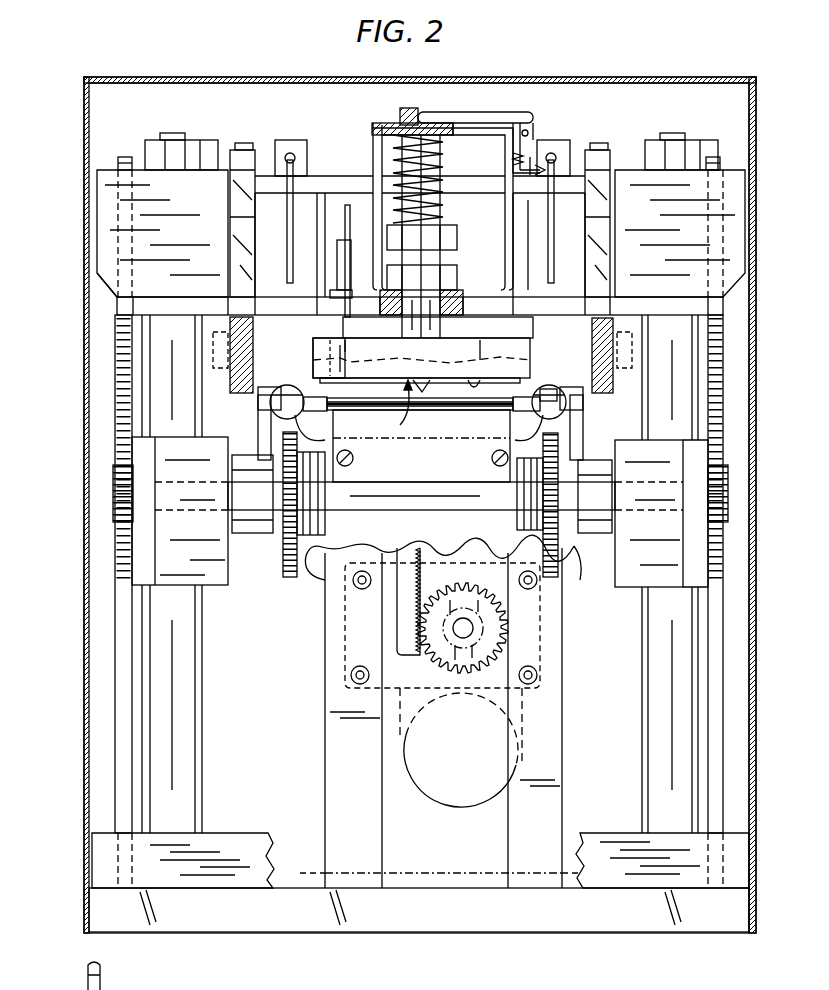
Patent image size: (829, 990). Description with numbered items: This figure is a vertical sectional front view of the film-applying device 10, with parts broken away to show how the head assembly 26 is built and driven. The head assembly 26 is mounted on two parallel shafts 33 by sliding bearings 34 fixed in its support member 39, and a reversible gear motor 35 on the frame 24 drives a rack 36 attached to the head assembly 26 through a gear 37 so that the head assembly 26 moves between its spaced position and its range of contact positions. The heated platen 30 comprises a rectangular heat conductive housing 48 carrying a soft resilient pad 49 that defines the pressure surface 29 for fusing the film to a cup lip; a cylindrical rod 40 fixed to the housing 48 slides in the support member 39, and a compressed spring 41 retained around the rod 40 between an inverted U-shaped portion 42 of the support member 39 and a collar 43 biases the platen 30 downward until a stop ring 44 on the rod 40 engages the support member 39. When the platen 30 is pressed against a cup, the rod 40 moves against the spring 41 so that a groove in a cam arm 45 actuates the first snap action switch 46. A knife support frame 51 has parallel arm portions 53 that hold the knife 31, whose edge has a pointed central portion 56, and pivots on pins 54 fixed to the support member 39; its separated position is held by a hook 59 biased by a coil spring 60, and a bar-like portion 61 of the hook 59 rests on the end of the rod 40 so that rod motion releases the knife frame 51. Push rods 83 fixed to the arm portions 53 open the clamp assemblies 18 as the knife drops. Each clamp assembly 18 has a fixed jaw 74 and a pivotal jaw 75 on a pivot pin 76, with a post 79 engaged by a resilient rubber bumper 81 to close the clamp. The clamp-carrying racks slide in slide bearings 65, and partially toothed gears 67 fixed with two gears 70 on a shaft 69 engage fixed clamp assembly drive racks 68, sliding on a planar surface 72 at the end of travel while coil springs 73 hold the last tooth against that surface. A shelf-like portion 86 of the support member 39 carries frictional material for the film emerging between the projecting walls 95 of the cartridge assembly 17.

The device 10 is at (170, 60).
The cartridge assembly 17 is at (420, 416).
The clamp assemblies 18 is at (287, 395).
The frame 24 is at (495, 917).
The head assembly 26 is at (108, 288).
The pressure surface 29 is at (420, 389).
The heated platen 30 is at (421, 358).
The knife 31 is at (438, 327).
The shafts 33 is at (162, 158).
The sliding bearings 34 is at (421, 378).
The reversible gear motor 35 is at (455, 790).
The rack 36 is at (400, 610).
The gear 37 is at (440, 655).
The support member 39 is at (196, 307).
The cylindrical rod 40 is at (400, 112).
The compressed spring 41 is at (443, 213).
The inverted U-shaped portion 42 is at (373, 162).
The collar 43 is at (460, 238).
The stop ring 44 is at (458, 278).
The cam arm 45 is at (346, 230).
The first snap action switch 46 is at (341, 275).
The housing 48 is at (330, 353).
The pad 49 is at (392, 402).
The knife support frame 51 is at (330, 172).
The arm portions 53 is at (296, 140).
The pins 54 is at (253, 347).
The central portion 56 is at (422, 385).
The hook 59 is at (530, 170).
The coil spring 60 is at (520, 158).
The bar-like portion 61 is at (447, 115).
The slide bearings 65 is at (300, 415).
The partially toothed gears 67 is at (113, 490).
The clamp assembly drive racks 68 is at (118, 388).
The shaft 69 is at (200, 490).
The gears 70 is at (290, 577).
The planar surface 72 is at (120, 677).
The coil springs 73 is at (348, 470).
The fixed jaw 74 is at (310, 392).
The pivotal jaw 75 is at (340, 411).
The pivot pin 76 is at (354, 456).
The post 79 is at (265, 425).
The resilient rubber bumper 81 is at (262, 440).
The push rods 83 is at (288, 242).
The shelf-like portion 86 is at (425, 410).
The projecting walls 95 is at (368, 405).